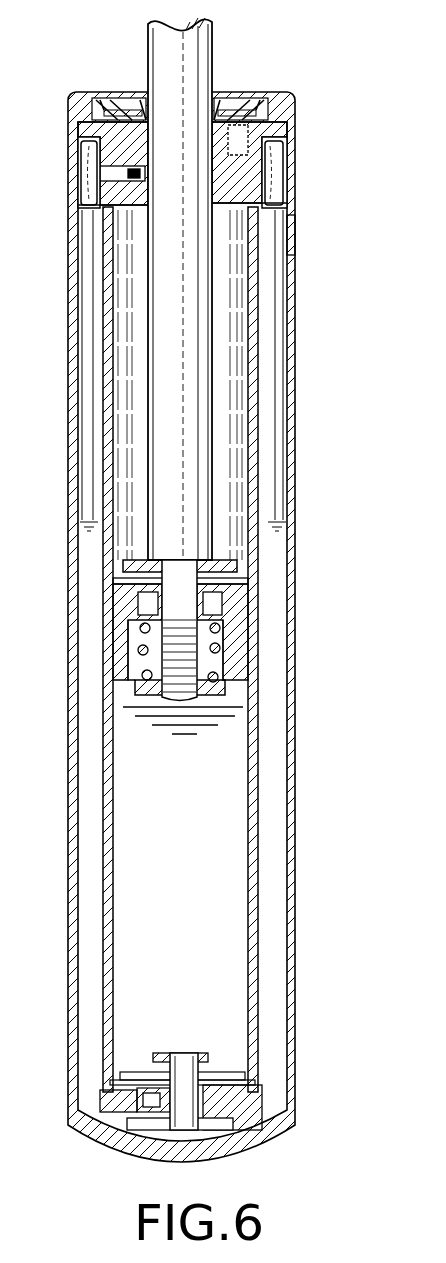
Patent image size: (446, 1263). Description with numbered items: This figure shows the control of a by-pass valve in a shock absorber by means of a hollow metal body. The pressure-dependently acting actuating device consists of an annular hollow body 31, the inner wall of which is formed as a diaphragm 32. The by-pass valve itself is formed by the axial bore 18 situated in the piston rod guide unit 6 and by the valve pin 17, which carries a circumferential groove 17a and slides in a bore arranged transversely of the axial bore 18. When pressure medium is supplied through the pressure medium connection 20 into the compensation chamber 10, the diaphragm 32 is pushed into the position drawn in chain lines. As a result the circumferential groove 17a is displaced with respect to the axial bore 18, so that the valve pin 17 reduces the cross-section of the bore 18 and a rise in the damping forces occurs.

The compensation chamber 10 is at (272, 724).
The pressure medium connection 20 is at (290, 233).
The piston rod guide unit 6 is at (237, 188).
The valve pin 17 is at (97, 168).
The circumferential groove 17a is at (117, 122).
The axial bore 18 is at (127, 195).
The hollow body 31 is at (80, 182).
The diaphragm 32 is at (267, 173).